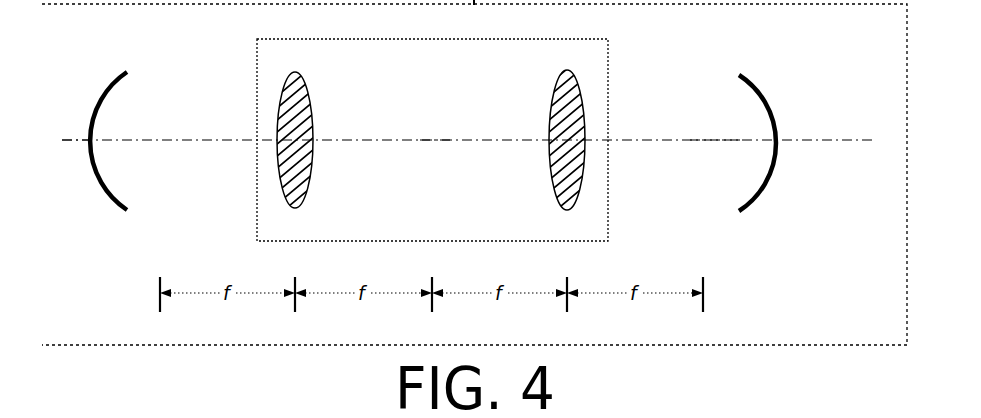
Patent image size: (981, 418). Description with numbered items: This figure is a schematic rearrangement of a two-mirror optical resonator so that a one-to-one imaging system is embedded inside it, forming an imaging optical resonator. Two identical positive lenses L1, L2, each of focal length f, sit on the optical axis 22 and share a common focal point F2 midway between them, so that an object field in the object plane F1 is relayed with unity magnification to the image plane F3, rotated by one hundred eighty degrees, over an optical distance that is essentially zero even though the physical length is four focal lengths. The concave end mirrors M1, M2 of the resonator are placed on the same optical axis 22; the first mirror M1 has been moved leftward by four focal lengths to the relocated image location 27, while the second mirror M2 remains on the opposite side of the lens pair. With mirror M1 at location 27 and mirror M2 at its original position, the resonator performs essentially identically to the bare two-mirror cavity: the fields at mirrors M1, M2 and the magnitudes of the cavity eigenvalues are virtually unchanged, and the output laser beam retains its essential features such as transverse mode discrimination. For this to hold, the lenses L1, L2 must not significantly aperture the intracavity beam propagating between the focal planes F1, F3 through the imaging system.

The relocated image location 27 is at (135, 127).
The optical axis 22 is at (805, 140).
The concave end mirror M1 is at (143, 116).
The concave end mirror M2 is at (752, 127).
The positive lens L1 is at (295, 147).
The positive lens L2 is at (567, 147).
The object plane F1 is at (69, 125).
The common focal point F2 is at (435, 126).
The image plane F3 is at (713, 126).